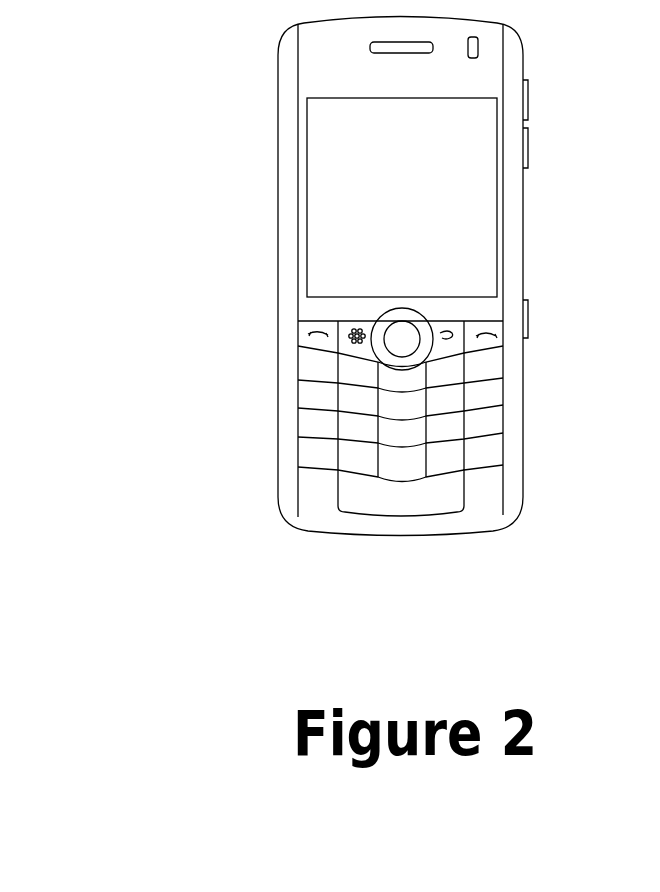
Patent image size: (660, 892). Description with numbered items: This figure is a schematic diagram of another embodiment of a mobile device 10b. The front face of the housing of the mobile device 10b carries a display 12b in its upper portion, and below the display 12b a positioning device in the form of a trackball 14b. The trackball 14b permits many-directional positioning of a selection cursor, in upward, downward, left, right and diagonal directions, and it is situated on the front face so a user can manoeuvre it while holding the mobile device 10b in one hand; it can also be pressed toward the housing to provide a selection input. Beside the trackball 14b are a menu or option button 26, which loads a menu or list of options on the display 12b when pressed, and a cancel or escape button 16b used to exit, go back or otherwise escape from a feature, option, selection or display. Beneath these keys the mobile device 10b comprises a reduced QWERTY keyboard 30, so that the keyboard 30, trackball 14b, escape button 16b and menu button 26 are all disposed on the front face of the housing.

The mobile device 10b is at (150, 76).
The display 12b is at (417, 187).
The trackball 14b is at (418, 318).
The cancel or escape button 16b is at (453, 347).
The menu or option button 26 is at (350, 333).
The reduced QWERTY keyboard 30 is at (303, 484).